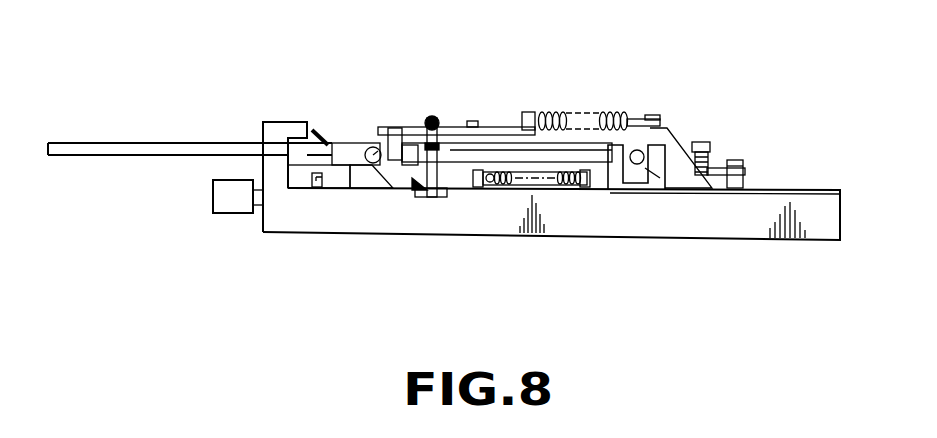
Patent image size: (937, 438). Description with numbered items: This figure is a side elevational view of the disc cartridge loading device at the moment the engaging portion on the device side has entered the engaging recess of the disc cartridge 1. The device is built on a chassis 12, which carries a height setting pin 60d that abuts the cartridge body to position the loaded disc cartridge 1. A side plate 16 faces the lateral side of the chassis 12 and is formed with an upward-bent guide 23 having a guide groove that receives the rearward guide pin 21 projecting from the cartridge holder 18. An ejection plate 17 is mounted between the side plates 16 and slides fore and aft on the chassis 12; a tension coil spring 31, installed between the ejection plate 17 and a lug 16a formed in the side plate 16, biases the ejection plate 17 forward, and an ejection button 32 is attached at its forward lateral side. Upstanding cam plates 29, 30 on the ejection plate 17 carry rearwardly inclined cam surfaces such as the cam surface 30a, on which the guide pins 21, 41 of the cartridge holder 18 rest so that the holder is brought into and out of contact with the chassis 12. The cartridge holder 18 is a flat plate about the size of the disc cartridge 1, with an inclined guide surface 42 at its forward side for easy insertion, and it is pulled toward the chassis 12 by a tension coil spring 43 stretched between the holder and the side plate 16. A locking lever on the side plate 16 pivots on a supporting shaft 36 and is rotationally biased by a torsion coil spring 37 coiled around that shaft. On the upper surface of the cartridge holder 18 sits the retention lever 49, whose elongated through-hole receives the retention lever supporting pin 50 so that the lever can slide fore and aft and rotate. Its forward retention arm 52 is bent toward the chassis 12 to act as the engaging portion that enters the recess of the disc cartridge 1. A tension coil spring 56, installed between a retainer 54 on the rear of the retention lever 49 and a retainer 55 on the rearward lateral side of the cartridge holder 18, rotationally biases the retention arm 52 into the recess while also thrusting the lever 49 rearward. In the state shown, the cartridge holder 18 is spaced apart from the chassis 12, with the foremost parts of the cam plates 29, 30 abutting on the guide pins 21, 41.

The disc cartridge 1 is at (155, 145).
The chassis 12 is at (750, 240).
The side plate 16 is at (320, 217).
The lug 16a is at (480, 190).
The ejection plate 17 is at (405, 190).
The cartridge holder 18 is at (460, 160).
The guide pin 21 is at (640, 130).
The guide 23 is at (660, 176).
The cam plate 29 is at (360, 180).
The cam plate 30 is at (633, 192).
The cam surface 30a is at (657, 185).
The tension coil spring 31 is at (570, 187).
The ejection button 32 is at (213, 195).
The supporting shaft 36 is at (707, 140).
The torsion coil spring 37 is at (712, 160).
The guide pin 41 is at (370, 142).
The inclined guide surface 42 is at (322, 127).
The tension coil spring 43 is at (413, 197).
The retention lever 49 is at (553, 116).
The retention lever supporting pin 50 is at (470, 120).
The retention arm 52 is at (393, 128).
The retainer 54 is at (527, 114).
The retainer 55 is at (660, 120).
The tension coil spring 56 is at (607, 116).
The height setting pin 60d is at (308, 180).